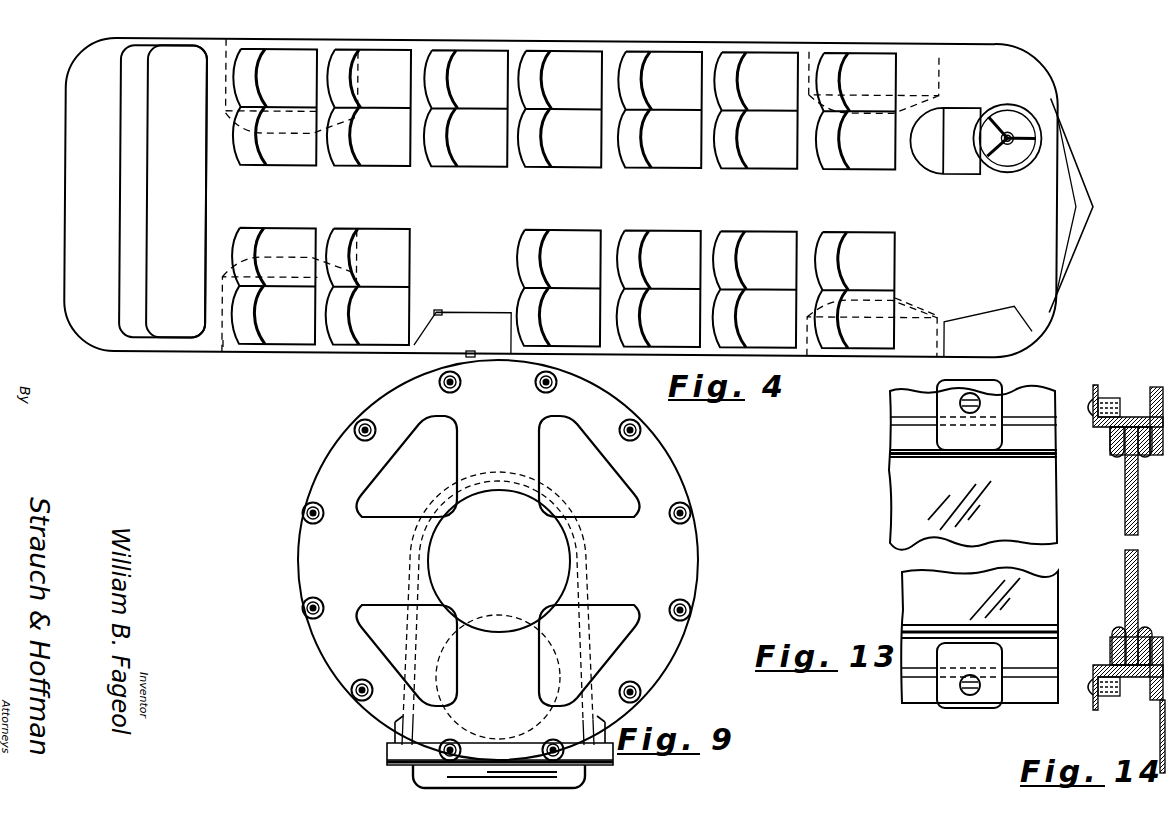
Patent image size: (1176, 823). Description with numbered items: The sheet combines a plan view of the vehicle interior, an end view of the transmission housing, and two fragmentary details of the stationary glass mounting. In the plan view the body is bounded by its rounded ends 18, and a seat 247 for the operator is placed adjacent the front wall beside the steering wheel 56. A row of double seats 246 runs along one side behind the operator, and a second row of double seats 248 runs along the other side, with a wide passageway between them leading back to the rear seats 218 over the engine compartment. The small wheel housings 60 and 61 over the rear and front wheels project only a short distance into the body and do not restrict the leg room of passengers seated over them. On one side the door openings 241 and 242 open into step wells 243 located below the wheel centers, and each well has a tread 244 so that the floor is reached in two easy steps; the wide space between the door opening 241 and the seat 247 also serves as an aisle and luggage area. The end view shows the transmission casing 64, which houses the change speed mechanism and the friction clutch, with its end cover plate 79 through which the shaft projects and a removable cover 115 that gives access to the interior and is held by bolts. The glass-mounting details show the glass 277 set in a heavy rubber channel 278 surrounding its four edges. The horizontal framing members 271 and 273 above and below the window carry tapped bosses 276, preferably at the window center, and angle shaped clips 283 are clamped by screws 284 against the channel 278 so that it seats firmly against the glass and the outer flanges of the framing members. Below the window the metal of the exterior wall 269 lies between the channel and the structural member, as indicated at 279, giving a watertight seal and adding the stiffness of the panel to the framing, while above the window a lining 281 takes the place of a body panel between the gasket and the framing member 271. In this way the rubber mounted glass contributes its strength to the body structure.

In FIG. 4, the end 18 is at (65, 207).
In FIG. 4, the rear seat 218 is at (207, 196).
In FIG. 4, the wheel housing 60 is at (222, 336).
In FIG. 4, the wheel housing 61 is at (920, 308).
In FIG. 4, the door opening 242 is at (474, 351).
In FIG. 4, the step well 243 is at (436, 310).
In FIG. 4, the tread 244 is at (462, 316).
In FIG. 4, the door opening 241 is at (1015, 353).
In FIG. 4, the double seat 246 is at (838, 58).
In FIG. 4, the double seat 248 is at (783, 235).
In FIG. 4, the seat 247 is at (962, 106).
In FIG. 4, the steering wheel 56 is at (1000, 170).
In FIG. 9, the end cover plate 79 is at (662, 484).
In FIG. 9, the casing 64 is at (410, 571).
In FIG. 9, the removable cover 115 is at (582, 769).
In FIG. 13, the glass 277 is at (1124, 570).
In FIG. 14, the glass 277 is at (1103, 546).
In FIG. 13, the rubber channel 278 is at (1123, 460).
In FIG. 14, the rubber channel 278 is at (1131, 546).
In FIG. 13, the angle shaped clip 283 is at (1002, 437).
In FIG. 13, the screw 284 is at (983, 406).
In FIG. 14, the tapped boss 276 is at (1107, 398).
In FIG. 14, the lining 281 is at (1140, 417).
In FIG. 14, the framing member 271 is at (1158, 387).
In FIG. 14, the wall portion 279 is at (1146, 630).
In FIG. 14, the framing member 273 is at (1135, 680).
In FIG. 14, the exterior vehicle wall 269 is at (1161, 734).